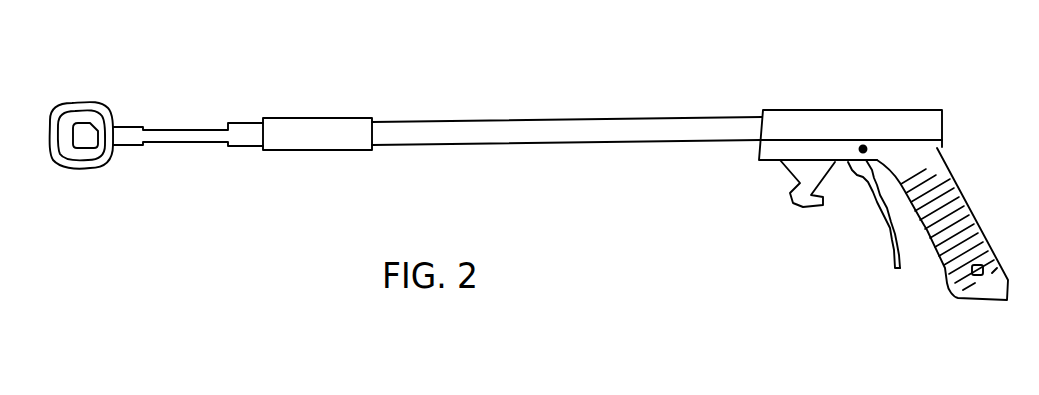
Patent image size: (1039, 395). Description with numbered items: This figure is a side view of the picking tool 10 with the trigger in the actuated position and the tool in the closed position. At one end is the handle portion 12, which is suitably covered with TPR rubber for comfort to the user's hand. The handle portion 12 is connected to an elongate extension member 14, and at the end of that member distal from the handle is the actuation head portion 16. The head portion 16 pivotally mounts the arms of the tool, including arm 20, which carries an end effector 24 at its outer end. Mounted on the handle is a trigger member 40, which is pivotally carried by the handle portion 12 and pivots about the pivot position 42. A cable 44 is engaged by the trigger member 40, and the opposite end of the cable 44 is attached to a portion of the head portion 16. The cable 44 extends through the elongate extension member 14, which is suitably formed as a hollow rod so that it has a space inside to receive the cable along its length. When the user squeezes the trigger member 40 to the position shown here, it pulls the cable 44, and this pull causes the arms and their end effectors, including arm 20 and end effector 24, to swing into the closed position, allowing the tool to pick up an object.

The picking tool 10 is at (502, 213).
The handle portion 12 is at (945, 268).
The elongate extension member 14 is at (517, 127).
The actuation head portion 16 is at (300, 125).
The arm 20 is at (201, 135).
The end effector 24 is at (88, 140).
The trigger member 40 is at (885, 217).
The pivot position 42 is at (866, 145).
The cable 44 is at (781, 166).